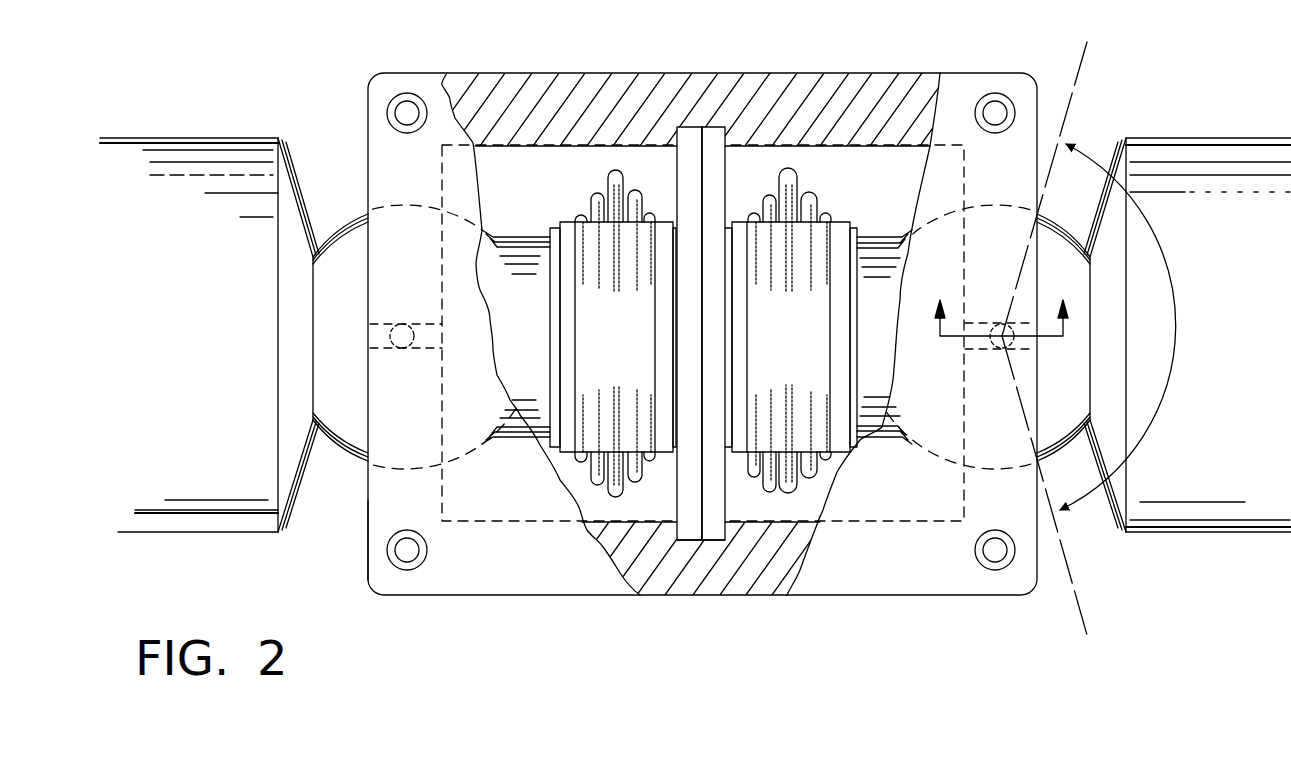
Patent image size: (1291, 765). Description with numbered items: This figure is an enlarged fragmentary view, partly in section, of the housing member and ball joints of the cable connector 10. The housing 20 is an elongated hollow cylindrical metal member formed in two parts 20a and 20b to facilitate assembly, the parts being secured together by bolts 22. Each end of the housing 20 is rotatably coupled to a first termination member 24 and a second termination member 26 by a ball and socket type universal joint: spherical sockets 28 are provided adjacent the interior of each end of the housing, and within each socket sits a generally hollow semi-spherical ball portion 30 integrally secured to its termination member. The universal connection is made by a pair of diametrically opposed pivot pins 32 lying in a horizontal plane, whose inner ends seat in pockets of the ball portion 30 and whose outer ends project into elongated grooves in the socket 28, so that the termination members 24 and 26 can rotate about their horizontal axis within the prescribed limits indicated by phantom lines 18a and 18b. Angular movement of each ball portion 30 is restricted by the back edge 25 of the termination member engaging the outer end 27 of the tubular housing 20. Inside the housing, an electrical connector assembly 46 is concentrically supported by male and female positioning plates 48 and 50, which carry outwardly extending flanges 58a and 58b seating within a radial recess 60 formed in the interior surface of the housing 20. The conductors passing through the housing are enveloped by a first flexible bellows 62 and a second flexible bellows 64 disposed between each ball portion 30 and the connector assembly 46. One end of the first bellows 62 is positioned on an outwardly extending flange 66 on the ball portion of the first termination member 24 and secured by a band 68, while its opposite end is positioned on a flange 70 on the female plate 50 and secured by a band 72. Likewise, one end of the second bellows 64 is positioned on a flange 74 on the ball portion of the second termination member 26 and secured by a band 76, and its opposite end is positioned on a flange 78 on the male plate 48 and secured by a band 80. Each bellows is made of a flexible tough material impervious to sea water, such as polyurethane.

The cable connector 10 is at (876, 67).
The phantom line 18a is at (1088, 62).
The phantom line 18b is at (1077, 585).
The housing 20 is at (378, 76).
The housing part 20a is at (422, 73).
The housing part 20b is at (512, 82).
The bolts 22 is at (392, 109).
The first termination member 24 is at (1165, 537).
The back edge 25 is at (300, 478).
The second termination member 26 is at (233, 534).
The outer end 27 is at (368, 545).
The sockets 28 is at (402, 202).
The ball portion 30 is at (343, 247).
The pivot pins 32 is at (402, 348).
The electrical connector assembly 46 is at (735, 158).
The male positioning plate 48 is at (693, 535).
The female positioning plate 50 is at (712, 534).
The outwardly extending flange 58a is at (670, 143).
The outwardly extending flange 58b is at (755, 110).
The radial recess 60 is at (702, 126).
The first flexible bellows 62 is at (775, 372).
The second flexible bellows 64 is at (593, 372).
The outwardly extending flange 66 is at (856, 446).
The band 68 is at (838, 450).
The outwardly extending flange 70 is at (727, 222).
The band 72 is at (738, 222).
The outwardly extending flange 74 is at (570, 450).
The band 76 is at (558, 450).
The outwardly extending flange 78 is at (672, 222).
The band 80 is at (662, 222).